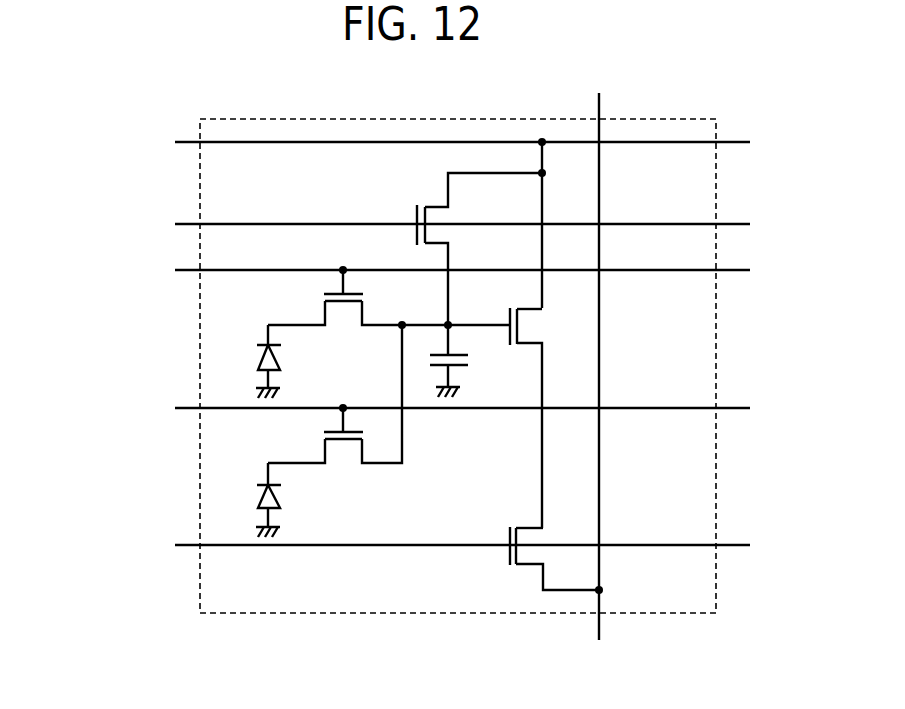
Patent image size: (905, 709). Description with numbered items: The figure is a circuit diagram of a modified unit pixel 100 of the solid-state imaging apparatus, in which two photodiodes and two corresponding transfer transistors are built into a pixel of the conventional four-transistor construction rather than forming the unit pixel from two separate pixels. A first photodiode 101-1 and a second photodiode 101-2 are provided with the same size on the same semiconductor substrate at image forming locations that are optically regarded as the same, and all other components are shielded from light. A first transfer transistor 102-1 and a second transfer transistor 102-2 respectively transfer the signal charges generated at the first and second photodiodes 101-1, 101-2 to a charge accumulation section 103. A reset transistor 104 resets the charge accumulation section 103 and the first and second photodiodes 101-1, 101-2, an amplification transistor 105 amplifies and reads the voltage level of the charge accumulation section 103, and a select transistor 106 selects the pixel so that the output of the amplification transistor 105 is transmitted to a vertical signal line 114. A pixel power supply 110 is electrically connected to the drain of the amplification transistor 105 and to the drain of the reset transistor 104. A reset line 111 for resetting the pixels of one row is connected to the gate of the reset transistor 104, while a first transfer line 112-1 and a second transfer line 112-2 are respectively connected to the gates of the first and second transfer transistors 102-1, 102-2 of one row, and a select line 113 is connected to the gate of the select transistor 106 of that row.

The unit pixel 100 is at (233, 614).
The first photodiode 101-1 is at (258, 352).
The second photodiode 101-2 is at (258, 492).
The first transfer transistor 102-1 is at (343, 320).
The second transfer transistor 102-2 is at (343, 460).
The charge accumulation section 103 is at (470, 357).
The reset transistor 104 is at (413, 208).
The amplification transistor 105 is at (538, 328).
The select transistor 106 is at (505, 557).
The pixel power supply 110 is at (178, 142).
The reset line 111 is at (178, 224).
The first transfer line 112-1 is at (178, 270).
The second transfer line 112-2 is at (178, 408).
The select line 113 is at (178, 545).
The vertical signal line 114 is at (600, 185).